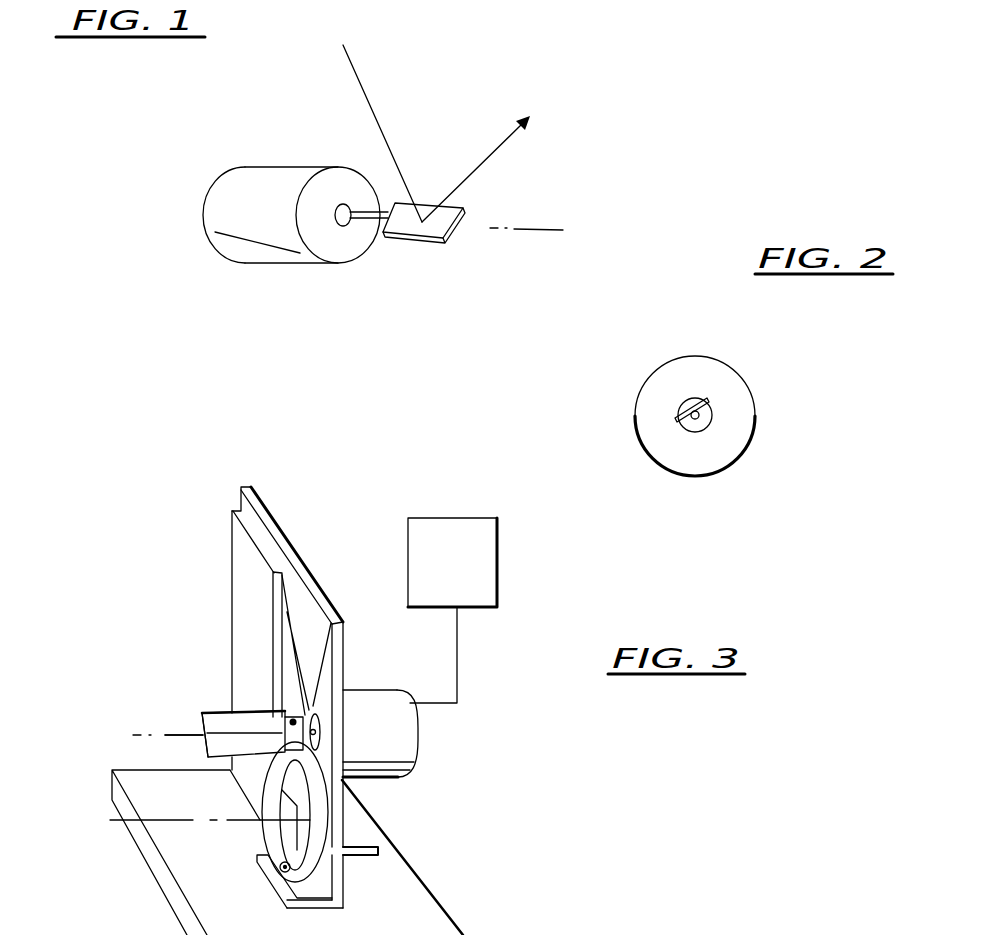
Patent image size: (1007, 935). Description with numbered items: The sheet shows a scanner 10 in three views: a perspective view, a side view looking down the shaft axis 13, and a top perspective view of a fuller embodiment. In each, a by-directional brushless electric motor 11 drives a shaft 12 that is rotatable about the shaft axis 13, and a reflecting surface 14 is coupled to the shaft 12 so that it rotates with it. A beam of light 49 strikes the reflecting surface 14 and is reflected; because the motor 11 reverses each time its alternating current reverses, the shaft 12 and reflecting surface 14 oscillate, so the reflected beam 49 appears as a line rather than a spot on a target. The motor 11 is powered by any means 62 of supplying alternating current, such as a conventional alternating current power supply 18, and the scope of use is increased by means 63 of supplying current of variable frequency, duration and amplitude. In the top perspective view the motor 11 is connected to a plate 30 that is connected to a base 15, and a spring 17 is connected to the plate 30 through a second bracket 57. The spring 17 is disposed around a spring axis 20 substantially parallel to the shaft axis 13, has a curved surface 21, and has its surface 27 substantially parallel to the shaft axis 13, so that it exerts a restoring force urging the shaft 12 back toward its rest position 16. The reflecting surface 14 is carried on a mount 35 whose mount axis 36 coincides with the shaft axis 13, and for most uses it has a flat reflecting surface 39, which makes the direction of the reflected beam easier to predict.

In FIG. 1, the scanner 10 is at (259, 148).
In FIG. 2, the scanner 10 is at (661, 350).
In FIG. 3, the scanner 10 is at (178, 593).
In FIG. 1, the by-directional brushless electric motor 11 is at (250, 240).
In FIG. 2, the by-directional brushless electric motor 11 is at (703, 365).
In FIG. 3, the by-directional brushless electric motor 11 is at (412, 698).
In FIG. 1, the shaft 12 is at (370, 227).
In FIG. 2, the shaft 12 is at (712, 415).
In FIG. 3, the shaft 12 is at (330, 620).
In FIG. 1, the shaft axis 13 is at (487, 228).
In FIG. 3, the shaft axis 13 is at (205, 732).
In FIG. 1, the reflecting surface 14 is at (397, 230).
In FIG. 2, the reflecting surface 14 is at (705, 397).
In FIG. 3, the reflecting surface 14 is at (267, 722).
In FIG. 3, the base 15 is at (155, 790).
In FIG. 3, the rest position 16 is at (277, 598).
In FIG. 3, the spring 17 is at (318, 807).
In FIG. 3, the alternating current power supply 18 is at (443, 535).
In FIG. 3, the spring axis 20 is at (160, 818).
In FIG. 3, the curved surface 21 is at (318, 786).
In FIG. 3, the surface of the spring 27 is at (315, 860).
In FIG. 3, the plate 30 is at (266, 512).
In FIG. 3, the mount 35 is at (280, 683).
In FIG. 3, the mount axis 36 is at (160, 735).
In FIG. 3, the flat reflecting surface 39 is at (210, 713).
In FIG. 1, the beam of light 49 is at (377, 133).
In FIG. 3, the second bracket 57 is at (297, 895).
In FIG. 3, the means of supplying alternating current 62 is at (468, 547).
In FIG. 3, the means of supplying alternating current of variable frequency, duration and ampli 63 is at (482, 585).